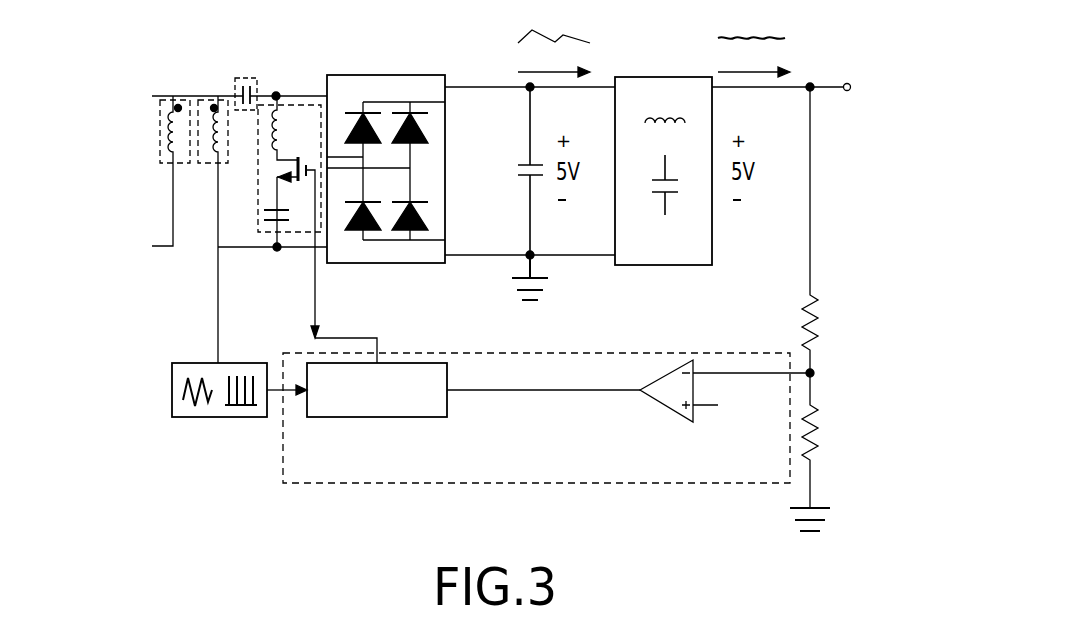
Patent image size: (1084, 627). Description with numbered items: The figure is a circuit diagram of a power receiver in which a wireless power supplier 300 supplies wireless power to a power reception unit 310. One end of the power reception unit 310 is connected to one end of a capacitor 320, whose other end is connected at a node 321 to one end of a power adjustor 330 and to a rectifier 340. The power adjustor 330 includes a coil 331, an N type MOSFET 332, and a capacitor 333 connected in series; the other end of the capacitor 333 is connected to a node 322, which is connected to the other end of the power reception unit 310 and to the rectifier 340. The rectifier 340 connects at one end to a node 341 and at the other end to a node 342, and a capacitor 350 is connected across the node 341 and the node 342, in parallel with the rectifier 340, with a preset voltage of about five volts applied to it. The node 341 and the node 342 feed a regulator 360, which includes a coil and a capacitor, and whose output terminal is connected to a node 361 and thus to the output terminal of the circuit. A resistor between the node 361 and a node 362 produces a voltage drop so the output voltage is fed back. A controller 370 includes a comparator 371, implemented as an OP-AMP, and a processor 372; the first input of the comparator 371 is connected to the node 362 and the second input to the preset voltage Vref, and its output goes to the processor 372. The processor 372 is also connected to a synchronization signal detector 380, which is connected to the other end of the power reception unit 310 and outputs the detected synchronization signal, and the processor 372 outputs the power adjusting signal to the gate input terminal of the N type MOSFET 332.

The wireless power supplier 300 is at (160, 130).
The power reception unit 310 is at (218, 96).
The capacitor 320 is at (243, 78).
The first node 321 is at (276, 96).
The node 322 is at (275, 248).
The power adjustor 330 is at (292, 233).
The coil 331 is at (283, 130).
The N type MOSFET 332 is at (290, 182).
The capacitor 333 is at (264, 220).
The rectifier 340 is at (445, 170).
The node 341 is at (530, 87).
The node 342 is at (530, 255).
The capacitor 350 is at (522, 178).
The regulator 360 is at (712, 242).
The node 361 is at (810, 87).
The node 362 is at (815, 373).
The controller 370 is at (537, 485).
The comparator 371 is at (693, 422).
The processor 372 is at (375, 418).
The synchronization signal detector 380 is at (172, 390).